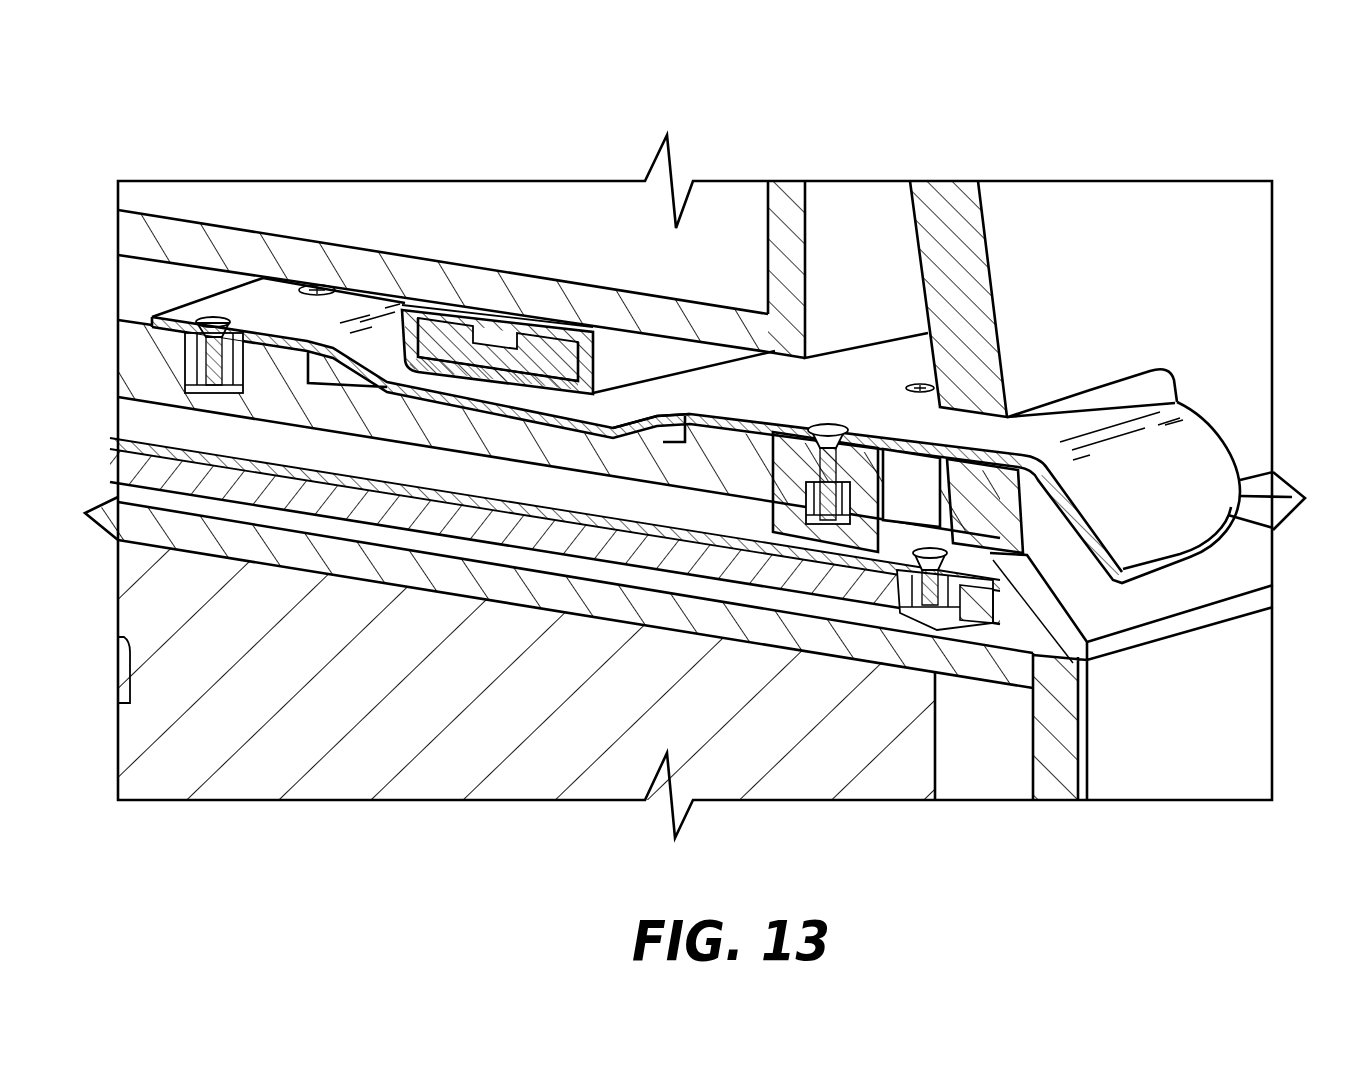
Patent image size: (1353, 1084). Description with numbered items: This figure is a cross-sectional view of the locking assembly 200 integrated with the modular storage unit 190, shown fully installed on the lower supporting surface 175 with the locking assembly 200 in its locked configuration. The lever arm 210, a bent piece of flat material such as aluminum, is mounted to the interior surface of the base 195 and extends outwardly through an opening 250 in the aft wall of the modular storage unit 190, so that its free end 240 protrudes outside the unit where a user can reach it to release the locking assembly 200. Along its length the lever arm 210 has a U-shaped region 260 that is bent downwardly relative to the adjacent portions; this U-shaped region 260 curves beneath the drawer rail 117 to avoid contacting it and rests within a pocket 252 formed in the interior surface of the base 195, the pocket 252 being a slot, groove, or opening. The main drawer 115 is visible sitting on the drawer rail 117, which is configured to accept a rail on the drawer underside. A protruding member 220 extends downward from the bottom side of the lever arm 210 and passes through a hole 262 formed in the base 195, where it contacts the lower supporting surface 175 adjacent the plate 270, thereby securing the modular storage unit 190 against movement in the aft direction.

The locking assembly 200 is at (188, 94).
The drawer rail 117 is at (455, 327).
The main drawer 115 is at (849, 205).
The modular storage unit 190 is at (1238, 228).
The lever arm 210 is at (217, 307).
The base 195 is at (142, 371).
The lower supporting surface 175 is at (140, 447).
The U-shaped region 260 is at (445, 392).
The pocket 252 is at (657, 430).
The hole 262 is at (767, 525).
The protruding member 220 is at (862, 538).
The plate 270 is at (957, 573).
The opening 250 is at (1192, 372).
The free end 240 is at (1180, 455).